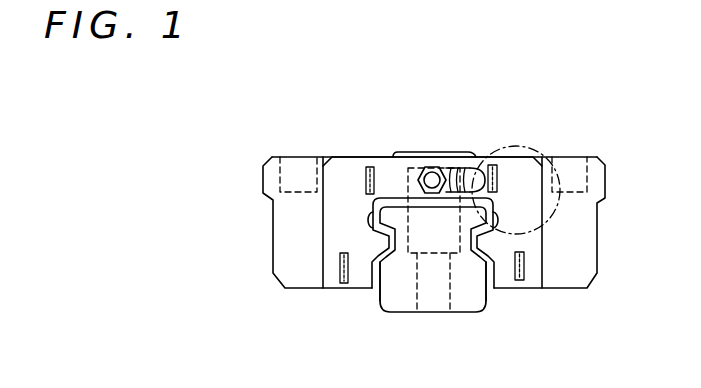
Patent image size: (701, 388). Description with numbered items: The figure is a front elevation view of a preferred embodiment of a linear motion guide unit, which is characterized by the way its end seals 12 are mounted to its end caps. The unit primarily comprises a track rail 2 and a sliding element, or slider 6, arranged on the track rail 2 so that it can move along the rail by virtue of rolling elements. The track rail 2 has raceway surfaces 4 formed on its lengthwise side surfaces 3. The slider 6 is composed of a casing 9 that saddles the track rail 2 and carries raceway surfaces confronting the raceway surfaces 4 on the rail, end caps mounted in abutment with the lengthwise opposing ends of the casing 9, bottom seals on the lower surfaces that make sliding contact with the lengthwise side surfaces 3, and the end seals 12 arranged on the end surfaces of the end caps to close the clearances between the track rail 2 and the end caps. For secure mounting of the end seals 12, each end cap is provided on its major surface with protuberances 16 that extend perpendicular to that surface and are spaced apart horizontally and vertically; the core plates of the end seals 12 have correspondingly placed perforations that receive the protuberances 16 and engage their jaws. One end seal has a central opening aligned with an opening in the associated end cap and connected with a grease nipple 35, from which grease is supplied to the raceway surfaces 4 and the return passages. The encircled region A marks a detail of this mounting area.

The track rail 2 is at (455, 313).
The lengthwise side surfaces 3 is at (380, 303).
The raceway surfaces 4 is at (376, 216).
The slider 6 is at (377, 114).
The casing 9 is at (292, 173).
The end seals 12 is at (350, 178).
The protuberances 16 is at (370, 167).
The grease nipple 35 is at (467, 166).
The detail region A is at (553, 149).